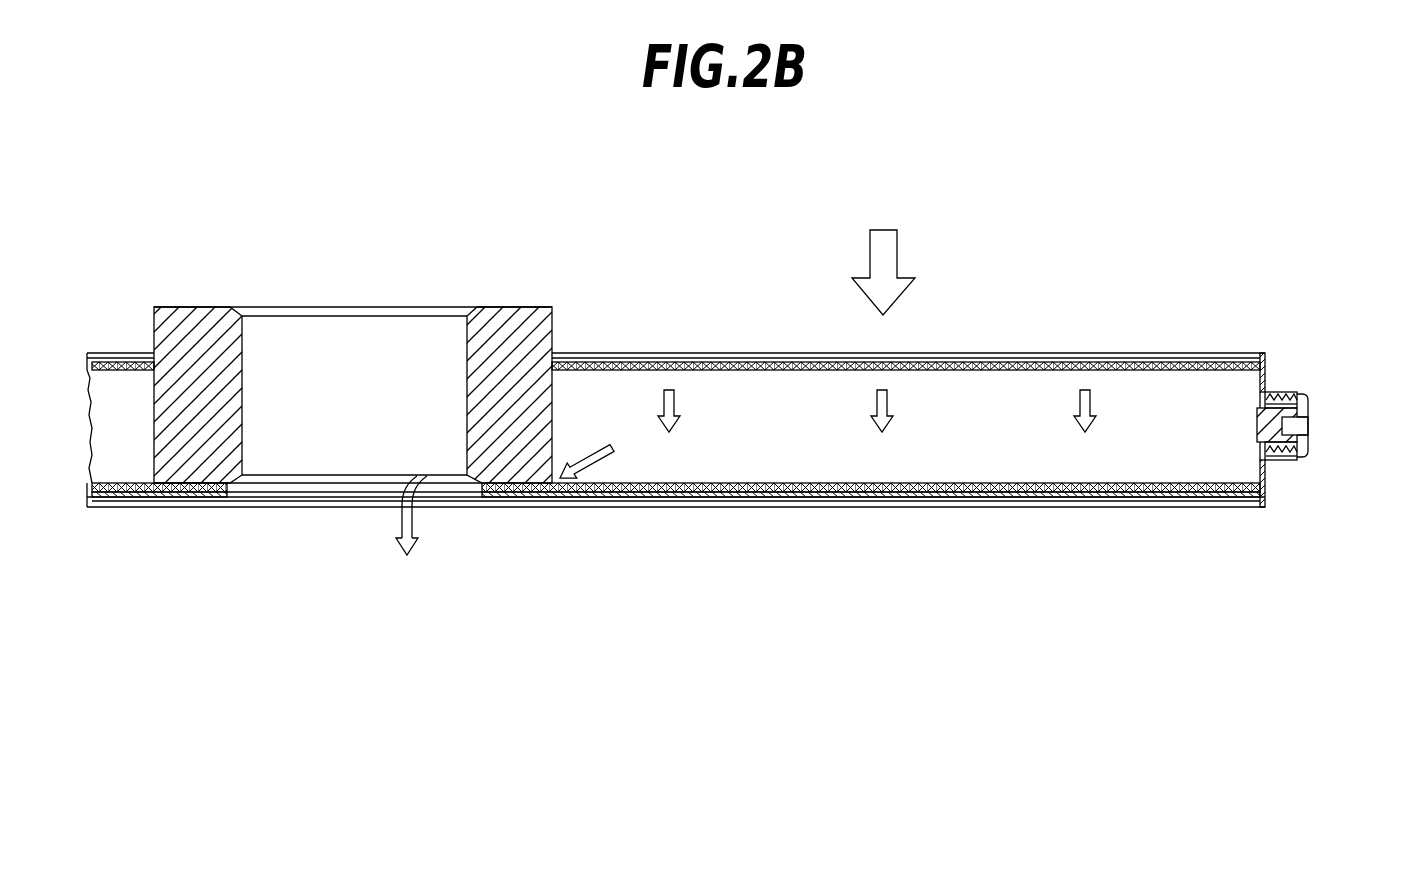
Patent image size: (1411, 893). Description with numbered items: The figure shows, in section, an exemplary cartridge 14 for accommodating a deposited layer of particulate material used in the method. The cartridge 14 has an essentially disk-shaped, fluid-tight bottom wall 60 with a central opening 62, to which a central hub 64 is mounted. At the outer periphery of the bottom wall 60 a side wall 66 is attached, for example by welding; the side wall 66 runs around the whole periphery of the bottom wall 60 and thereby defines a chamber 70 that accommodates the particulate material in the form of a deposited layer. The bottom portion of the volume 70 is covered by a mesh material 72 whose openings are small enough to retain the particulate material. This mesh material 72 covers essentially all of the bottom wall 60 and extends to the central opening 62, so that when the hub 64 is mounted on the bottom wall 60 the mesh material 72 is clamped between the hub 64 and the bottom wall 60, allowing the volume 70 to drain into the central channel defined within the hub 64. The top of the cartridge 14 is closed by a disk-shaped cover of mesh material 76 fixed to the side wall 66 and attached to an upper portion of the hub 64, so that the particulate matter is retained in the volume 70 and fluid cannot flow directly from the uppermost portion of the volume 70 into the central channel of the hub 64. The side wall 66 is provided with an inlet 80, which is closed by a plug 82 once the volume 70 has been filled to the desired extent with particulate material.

The cartridge 14 is at (992, 247).
The bottom wall 60 is at (1112, 498).
The central opening 62 is at (371, 407).
The central hub 64 is at (537, 415).
The side wall 66 is at (1236, 466).
The chamber 70 is at (803, 439).
The mesh material 72 is at (945, 483).
The mesh material cover 76 is at (795, 365).
The inlet 80 is at (1305, 423).
The plug 82 is at (1303, 446).